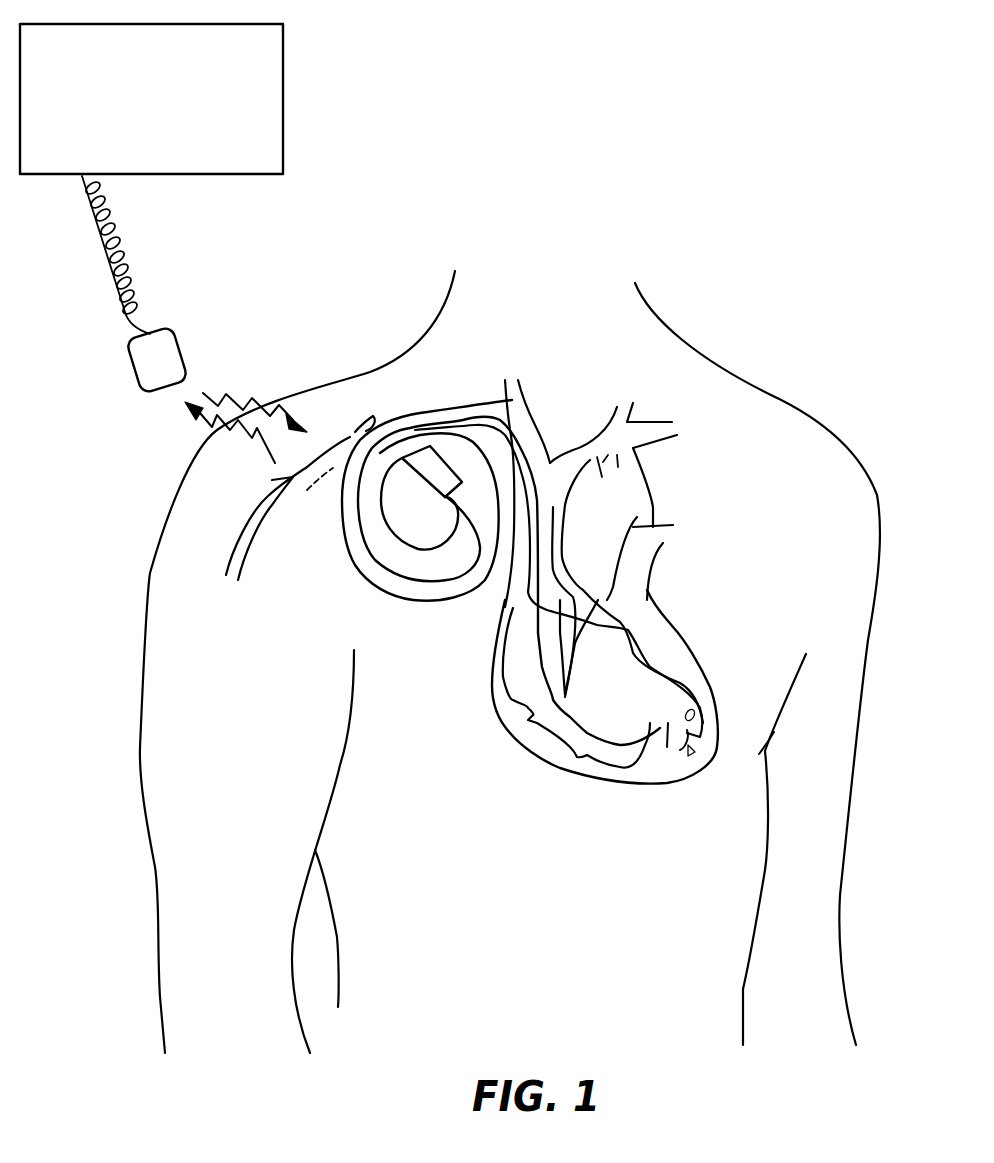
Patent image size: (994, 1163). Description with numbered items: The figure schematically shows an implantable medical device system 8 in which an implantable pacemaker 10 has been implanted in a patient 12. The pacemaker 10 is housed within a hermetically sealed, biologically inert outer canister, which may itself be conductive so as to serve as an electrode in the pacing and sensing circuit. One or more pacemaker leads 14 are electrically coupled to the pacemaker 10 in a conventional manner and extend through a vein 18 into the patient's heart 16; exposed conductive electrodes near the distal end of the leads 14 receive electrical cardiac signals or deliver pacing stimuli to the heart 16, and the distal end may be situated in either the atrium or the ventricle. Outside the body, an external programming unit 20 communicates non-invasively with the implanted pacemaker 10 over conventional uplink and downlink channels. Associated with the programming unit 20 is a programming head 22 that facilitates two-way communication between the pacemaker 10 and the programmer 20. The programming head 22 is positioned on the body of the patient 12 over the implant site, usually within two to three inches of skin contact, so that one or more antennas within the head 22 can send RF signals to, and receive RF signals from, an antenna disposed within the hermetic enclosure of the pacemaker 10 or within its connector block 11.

The implantable medical device system 8 is at (398, 328).
The implantable pacemaker 10 is at (392, 466).
The connector block 11 is at (422, 460).
The patient 12 is at (768, 395).
The pacemaker leads 14 is at (448, 607).
The heart 16 is at (633, 786).
The vein 18 is at (357, 432).
The external programming unit 20 is at (283, 75).
The programming head 22 is at (173, 342).